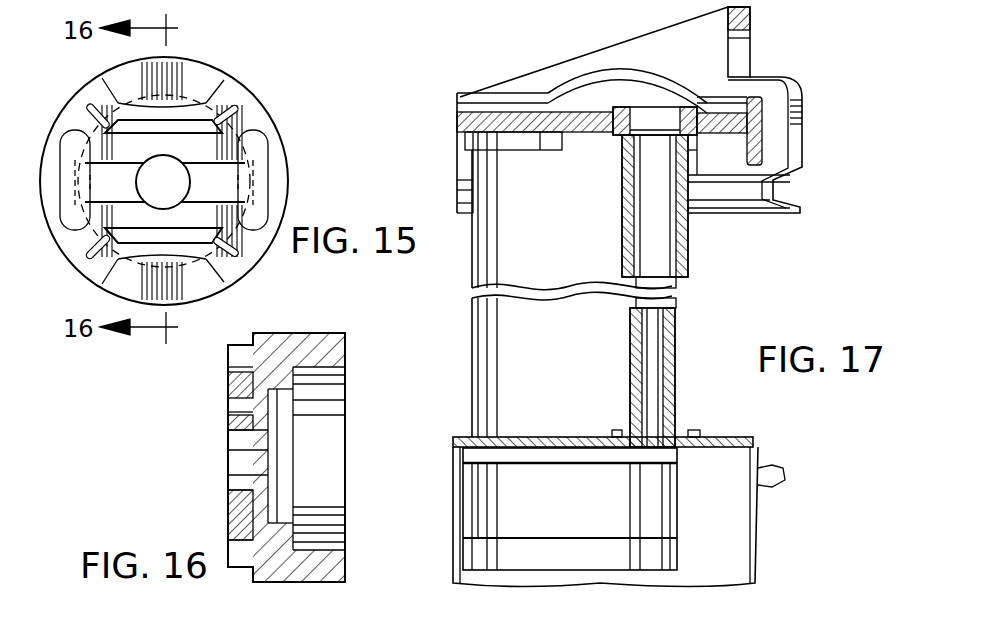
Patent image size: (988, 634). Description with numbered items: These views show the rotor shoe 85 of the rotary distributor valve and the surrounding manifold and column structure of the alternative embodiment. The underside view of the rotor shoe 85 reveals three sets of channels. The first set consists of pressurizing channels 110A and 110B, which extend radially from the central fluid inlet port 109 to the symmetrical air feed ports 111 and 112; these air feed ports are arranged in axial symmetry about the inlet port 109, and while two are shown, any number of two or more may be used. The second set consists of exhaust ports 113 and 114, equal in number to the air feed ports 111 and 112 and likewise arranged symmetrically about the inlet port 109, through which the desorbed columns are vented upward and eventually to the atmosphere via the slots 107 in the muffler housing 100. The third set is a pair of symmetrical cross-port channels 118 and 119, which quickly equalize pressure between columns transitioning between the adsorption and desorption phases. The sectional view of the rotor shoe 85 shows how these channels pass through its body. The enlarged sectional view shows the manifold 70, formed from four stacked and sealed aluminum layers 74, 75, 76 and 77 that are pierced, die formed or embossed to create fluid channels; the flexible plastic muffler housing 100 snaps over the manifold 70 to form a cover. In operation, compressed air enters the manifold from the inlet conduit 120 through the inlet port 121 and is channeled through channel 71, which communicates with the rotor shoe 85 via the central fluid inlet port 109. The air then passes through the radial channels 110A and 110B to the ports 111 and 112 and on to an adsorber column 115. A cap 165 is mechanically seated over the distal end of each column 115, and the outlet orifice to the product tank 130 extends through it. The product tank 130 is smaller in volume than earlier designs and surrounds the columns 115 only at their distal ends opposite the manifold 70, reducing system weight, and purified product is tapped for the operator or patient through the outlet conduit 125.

In FIG. 17, the manifold 70 is at (607, 70).
In FIG. 17, the channel 71 is at (628, 103).
In FIG. 17, the layer 74 is at (510, 93).
In FIG. 17, the layer 75 is at (458, 105).
In FIG. 17, the layer 76 is at (462, 120).
In FIG. 17, the layer 77 is at (534, 130).
In FIG. 15, the rotor shoe 85 is at (262, 246).
In FIG. 16, the rotor shoe 85 is at (333, 352).
In FIG. 17, the muffler housing 100 is at (752, 14).
In FIG. 17, the slots 107 is at (745, 45).
In FIG. 15, the central fluid inlet port 109 is at (170, 176).
In FIG. 16, the central fluid inlet port 109 is at (228, 452).
In FIG. 15, the pressurizing channel 110A is at (227, 182).
In FIG. 15, the pressurizing channel 110B is at (103, 180).
In FIG. 15, the air feed port 111 is at (258, 206).
In FIG. 15, the air feed port 112 is at (68, 217).
In FIG. 15, the exhaust port 113 is at (183, 66).
In FIG. 16, the exhaust port 113 is at (228, 358).
In FIG. 15, the exhaust port 114 is at (187, 292).
In FIG. 16, the exhaust port 114 is at (240, 558).
In FIG. 17, the adsorber column 115 is at (490, 345).
In FIG. 15, the cross-port channel 118 is at (217, 98).
In FIG. 16, the cross-port channel 118 is at (228, 401).
In FIG. 15, the cross-port channel 119 is at (98, 267).
In FIG. 16, the cross-port channel 119 is at (232, 512).
In FIG. 17, the inlet conduit 120 is at (690, 232).
In FIG. 17, the inlet port 121 is at (648, 112).
In FIG. 17, the outlet conduit 125 is at (680, 362).
In FIG. 17, the product tank 130 is at (758, 531).
In FIG. 17, the cap 165 is at (680, 547).